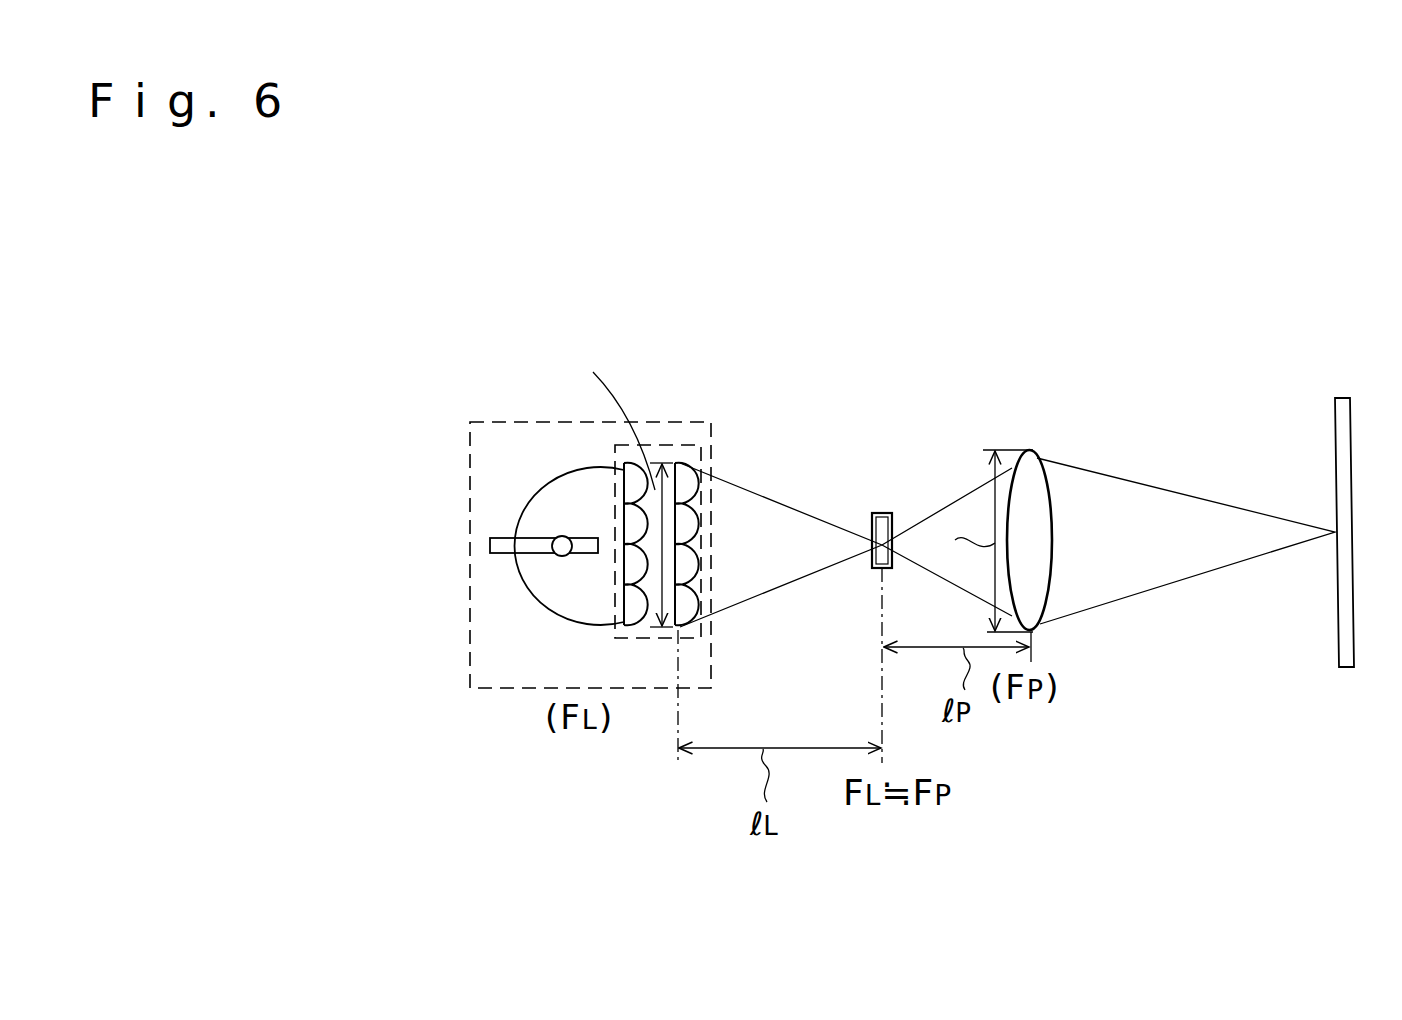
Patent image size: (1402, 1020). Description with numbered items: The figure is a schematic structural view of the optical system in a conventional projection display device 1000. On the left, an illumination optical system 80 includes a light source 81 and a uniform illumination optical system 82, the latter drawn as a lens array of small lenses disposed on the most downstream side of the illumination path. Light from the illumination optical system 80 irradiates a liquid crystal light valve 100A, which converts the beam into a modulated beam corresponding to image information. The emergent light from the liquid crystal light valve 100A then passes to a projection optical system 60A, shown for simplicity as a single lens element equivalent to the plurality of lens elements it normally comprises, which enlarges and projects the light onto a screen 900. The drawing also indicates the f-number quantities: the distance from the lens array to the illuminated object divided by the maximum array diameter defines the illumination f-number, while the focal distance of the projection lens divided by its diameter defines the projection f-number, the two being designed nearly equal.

The projection display device 1000 is at (1082, 352).
The illumination optical system 80 is at (657, 420).
The light source 81 is at (523, 602).
The uniform illumination optical system 82 is at (697, 443).
The liquid crystal light valve 100A is at (887, 512).
The projection optical system 60A is at (1036, 458).
The screen 900 is at (1335, 423).